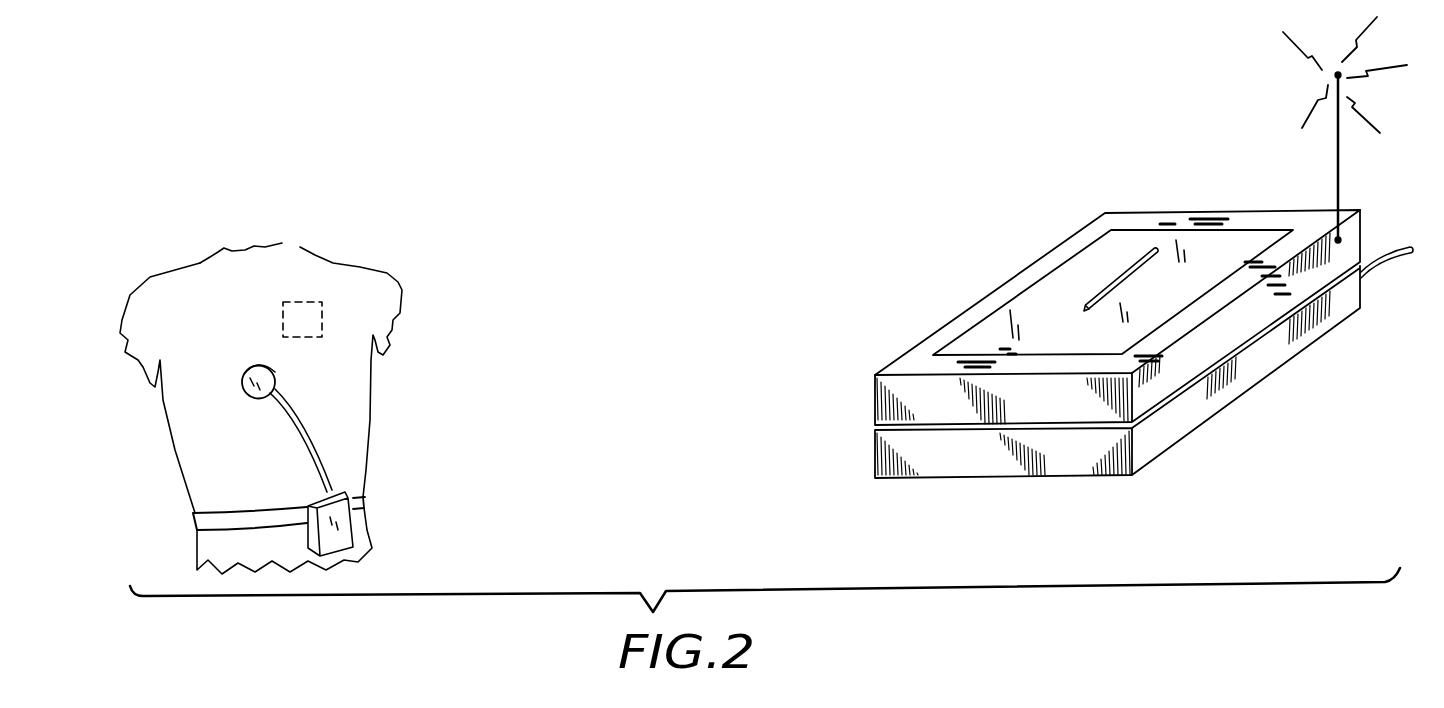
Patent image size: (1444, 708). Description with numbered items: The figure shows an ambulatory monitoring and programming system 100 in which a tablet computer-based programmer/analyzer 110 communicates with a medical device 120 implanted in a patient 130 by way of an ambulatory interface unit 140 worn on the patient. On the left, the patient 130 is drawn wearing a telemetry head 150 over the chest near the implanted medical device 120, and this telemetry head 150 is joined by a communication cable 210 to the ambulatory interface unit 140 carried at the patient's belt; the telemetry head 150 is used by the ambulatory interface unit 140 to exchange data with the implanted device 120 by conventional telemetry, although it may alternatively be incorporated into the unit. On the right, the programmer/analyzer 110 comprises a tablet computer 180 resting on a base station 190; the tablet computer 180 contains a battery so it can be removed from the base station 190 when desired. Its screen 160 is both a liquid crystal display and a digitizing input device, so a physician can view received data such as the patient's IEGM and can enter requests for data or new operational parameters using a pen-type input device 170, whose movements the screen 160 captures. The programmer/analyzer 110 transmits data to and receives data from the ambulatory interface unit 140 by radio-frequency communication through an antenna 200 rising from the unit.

The ambulatory monitoring and programming system 100 is at (700, 58).
The programmer/analyzer 110 is at (966, 203).
The medical device 120 is at (277, 313).
The patient 130 is at (200, 262).
The ambulatory interface unit 140 is at (347, 525).
The telemetry head 150 is at (250, 365).
The screen 160 is at (1093, 252).
The pen-type input device 170 is at (1090, 300).
The tablet computer 180 is at (875, 398).
The base station 190 is at (875, 450).
The antenna 200 is at (1335, 175).
The communication cable 210 is at (308, 450).